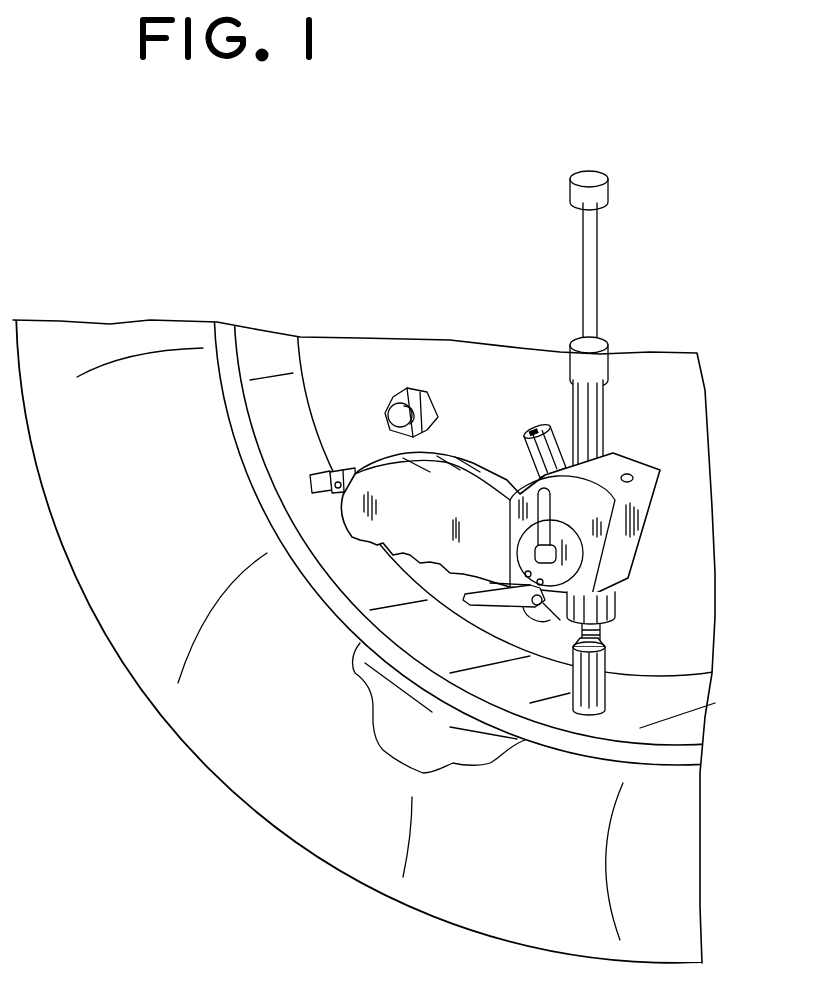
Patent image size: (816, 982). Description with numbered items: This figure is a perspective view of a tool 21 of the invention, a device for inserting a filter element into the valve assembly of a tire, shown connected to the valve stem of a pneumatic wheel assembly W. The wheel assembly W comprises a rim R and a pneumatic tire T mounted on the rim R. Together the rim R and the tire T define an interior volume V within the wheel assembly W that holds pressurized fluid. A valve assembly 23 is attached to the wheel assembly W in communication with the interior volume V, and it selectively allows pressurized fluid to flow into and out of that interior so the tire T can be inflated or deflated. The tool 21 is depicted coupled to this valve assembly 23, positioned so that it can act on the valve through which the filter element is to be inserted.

The tool 21 is at (630, 425).
The valve assembly 23 is at (624, 669).
The rim R is at (256, 348).
The pneumatic tire T is at (135, 621).
The interior volume V is at (396, 732).
The pneumatic wheel assembly W is at (720, 773).